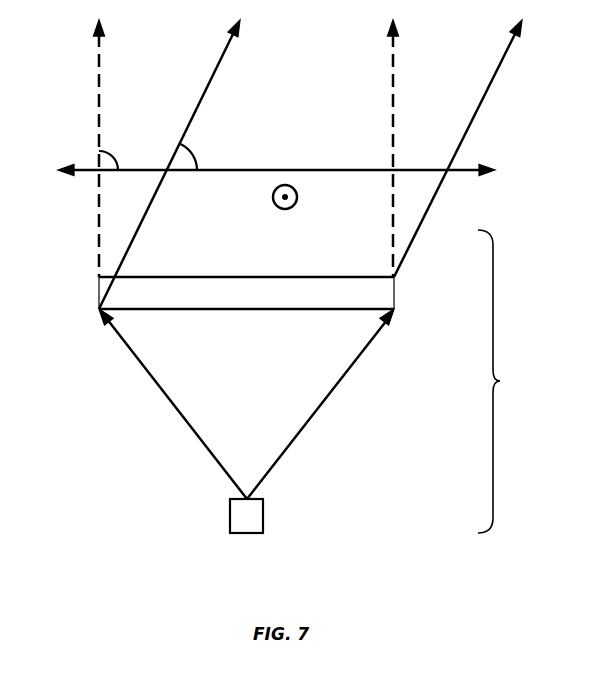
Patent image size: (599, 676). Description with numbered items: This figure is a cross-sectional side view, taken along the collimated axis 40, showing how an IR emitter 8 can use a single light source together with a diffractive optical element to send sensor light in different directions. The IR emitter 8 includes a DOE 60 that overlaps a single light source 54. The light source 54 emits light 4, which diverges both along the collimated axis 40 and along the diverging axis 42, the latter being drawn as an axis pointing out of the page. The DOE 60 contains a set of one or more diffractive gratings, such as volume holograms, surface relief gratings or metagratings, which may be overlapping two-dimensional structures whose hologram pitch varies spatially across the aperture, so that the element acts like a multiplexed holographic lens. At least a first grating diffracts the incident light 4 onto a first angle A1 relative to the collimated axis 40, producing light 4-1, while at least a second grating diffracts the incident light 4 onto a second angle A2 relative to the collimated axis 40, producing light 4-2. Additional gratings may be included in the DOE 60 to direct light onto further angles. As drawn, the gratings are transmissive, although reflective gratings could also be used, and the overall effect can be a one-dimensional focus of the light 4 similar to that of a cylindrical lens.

The light 4 is at (177, 410).
The light 4-1 is at (222, 68).
The light 4-2 is at (99, 68).
The IR emitter 8 is at (499, 381).
The collimated axis 40 is at (355, 172).
The diverging axis 42 is at (285, 210).
The light source 54 is at (247, 527).
The diffractive optical element 60 is at (397, 292).
The first angle A1 is at (202, 157).
The second angle A2 is at (121, 160).